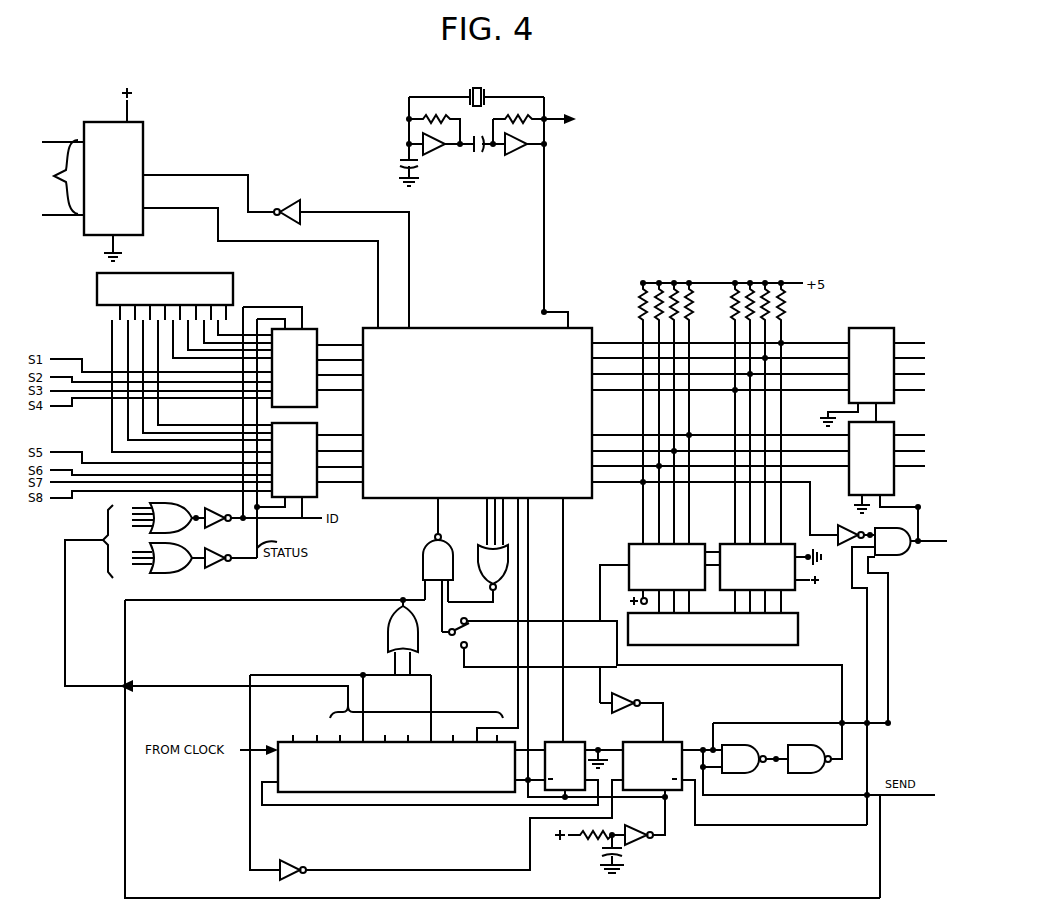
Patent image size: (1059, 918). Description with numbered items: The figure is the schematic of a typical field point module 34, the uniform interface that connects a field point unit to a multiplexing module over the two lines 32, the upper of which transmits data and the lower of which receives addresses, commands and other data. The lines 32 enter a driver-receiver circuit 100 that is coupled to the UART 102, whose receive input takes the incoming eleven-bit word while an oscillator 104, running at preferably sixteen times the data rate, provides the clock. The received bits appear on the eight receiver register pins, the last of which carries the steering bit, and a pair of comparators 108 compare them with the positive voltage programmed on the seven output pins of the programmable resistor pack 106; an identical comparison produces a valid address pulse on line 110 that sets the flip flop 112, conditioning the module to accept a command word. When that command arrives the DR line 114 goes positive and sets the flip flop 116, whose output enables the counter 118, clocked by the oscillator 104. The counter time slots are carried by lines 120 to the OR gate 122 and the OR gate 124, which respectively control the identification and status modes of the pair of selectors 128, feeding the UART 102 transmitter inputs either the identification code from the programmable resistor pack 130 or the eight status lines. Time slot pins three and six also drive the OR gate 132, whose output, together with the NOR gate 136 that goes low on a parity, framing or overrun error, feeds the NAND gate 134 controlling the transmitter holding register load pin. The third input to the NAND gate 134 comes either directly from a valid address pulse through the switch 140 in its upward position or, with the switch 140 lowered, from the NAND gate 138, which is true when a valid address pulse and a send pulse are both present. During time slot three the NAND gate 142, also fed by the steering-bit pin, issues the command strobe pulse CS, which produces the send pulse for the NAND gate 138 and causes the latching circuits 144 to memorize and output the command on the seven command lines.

The lines 32 is at (52, 168).
The field point module 34 is at (736, 131).
The driver-receiver circuit 100 is at (143, 130).
The universal asynchronous receiver/transmitter (UART) 102 is at (477, 328).
The oscillator 104 is at (546, 84).
The programmable resistor pack 106 is at (798, 628).
The comparators 108 is at (629, 570).
The valid address line 110 is at (600, 572).
The flip flop 112 is at (677, 742).
The DR line 114 is at (565, 515).
The flip flop 116 is at (570, 742).
The counter 118 is at (433, 792).
The lines 120 is at (217, 685).
The OR gate 122 is at (165, 506).
The OR gate 124 is at (165, 548).
The selectors 128 is at (317, 330).
The programmable resistor pack 130 is at (163, 273).
The OR gate 132 is at (388, 636).
The NAND gate 134 is at (423, 557).
The NOR gate 136 is at (478, 556).
The NAND gate 138 is at (740, 745).
The switch 140 is at (450, 645).
The NAND gate 142 is at (895, 556).
The latching circuits 144 is at (875, 328).